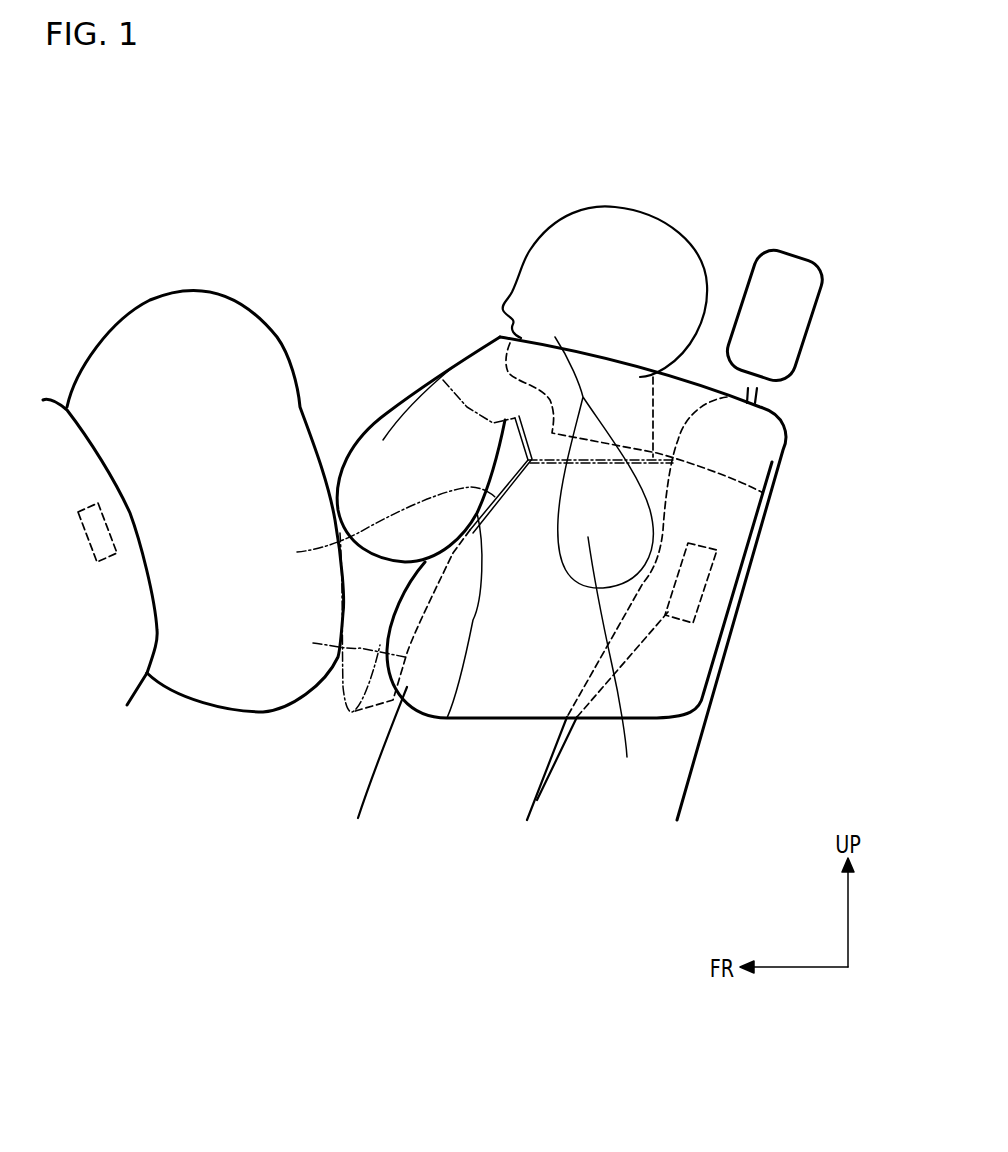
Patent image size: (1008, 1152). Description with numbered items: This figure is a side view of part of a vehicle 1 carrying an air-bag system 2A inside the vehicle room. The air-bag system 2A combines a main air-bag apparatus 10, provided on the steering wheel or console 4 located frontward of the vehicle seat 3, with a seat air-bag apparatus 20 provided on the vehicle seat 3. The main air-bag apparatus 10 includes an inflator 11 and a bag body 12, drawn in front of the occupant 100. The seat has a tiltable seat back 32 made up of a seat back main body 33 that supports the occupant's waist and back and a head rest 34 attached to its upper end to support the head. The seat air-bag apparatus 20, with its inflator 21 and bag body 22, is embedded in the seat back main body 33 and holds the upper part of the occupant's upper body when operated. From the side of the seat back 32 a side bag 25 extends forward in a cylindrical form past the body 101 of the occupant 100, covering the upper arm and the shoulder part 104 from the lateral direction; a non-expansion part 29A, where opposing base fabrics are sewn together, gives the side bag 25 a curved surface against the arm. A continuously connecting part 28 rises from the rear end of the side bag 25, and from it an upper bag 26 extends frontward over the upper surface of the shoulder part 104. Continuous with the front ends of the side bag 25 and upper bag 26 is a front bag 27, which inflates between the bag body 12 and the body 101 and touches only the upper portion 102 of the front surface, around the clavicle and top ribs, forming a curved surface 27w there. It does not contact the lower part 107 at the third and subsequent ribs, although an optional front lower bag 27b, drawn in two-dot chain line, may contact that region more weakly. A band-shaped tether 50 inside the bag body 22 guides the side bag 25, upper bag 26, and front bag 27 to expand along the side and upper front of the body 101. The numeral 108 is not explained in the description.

The vehicle 1 is at (263, 161).
The air-bag system 2A is at (477, 213).
The vehicle seat 3 is at (786, 454).
The steering wheel or console 4 is at (100, 442).
The main air-bag apparatus 10 is at (277, 336).
The inflator 11 is at (107, 532).
The bag body 12 is at (267, 712).
The seat air-bag apparatus 20 is at (467, 350).
The inflator 21 is at (707, 577).
The bag body 22 is at (757, 537).
The side bag 25 is at (523, 683).
The upper bag 26 is at (630, 380).
The front bag 27 is at (363, 440).
The front lower bag 27b is at (350, 714).
The curved surface 27w is at (447, 718).
The continuously connecting part 28 is at (743, 563).
The non-expansion part 29A is at (618, 665).
The seat back 32 is at (700, 747).
The seat back main body 33 is at (717, 680).
The head rest 34 is at (815, 317).
The tether 50 is at (443, 380).
The occupant 100 is at (556, 214).
The body 101 is at (367, 780).
The upper portion 102 is at (372, 527).
The shoulder part 104 is at (763, 493).
The lower part 107 is at (335, 640).
The occupant head 108 is at (627, 207).